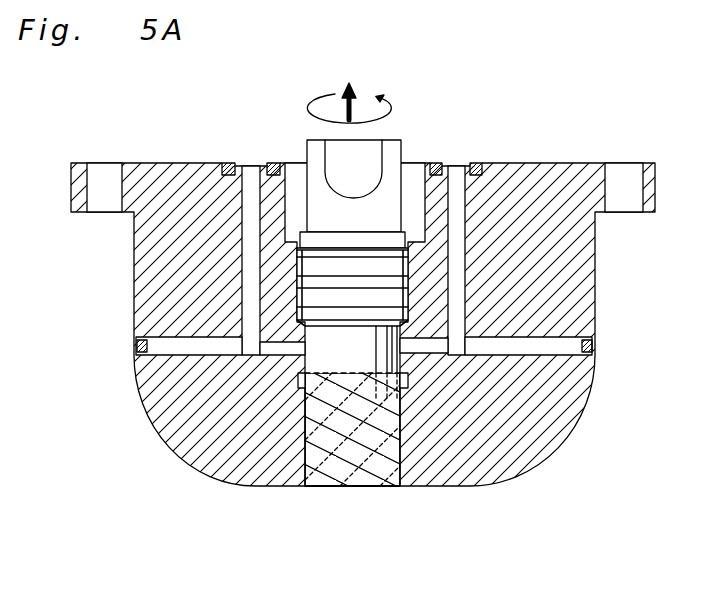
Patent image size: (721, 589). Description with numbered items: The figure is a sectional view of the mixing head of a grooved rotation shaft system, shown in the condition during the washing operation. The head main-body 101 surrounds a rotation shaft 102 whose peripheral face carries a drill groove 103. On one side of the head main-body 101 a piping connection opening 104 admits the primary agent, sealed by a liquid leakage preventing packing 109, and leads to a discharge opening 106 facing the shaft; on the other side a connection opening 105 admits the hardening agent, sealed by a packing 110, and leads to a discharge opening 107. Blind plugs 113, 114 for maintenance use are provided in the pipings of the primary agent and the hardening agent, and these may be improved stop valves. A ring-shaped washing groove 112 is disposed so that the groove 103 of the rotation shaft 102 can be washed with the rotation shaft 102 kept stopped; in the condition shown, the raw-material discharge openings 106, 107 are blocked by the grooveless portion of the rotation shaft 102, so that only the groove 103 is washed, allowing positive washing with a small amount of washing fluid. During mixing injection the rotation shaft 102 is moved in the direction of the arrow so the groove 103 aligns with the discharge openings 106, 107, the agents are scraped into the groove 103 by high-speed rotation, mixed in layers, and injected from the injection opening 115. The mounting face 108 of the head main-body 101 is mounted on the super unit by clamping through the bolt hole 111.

The head main-body 101 is at (177, 420).
The rotation shaft 102 is at (390, 168).
The drill groove 103 is at (372, 418).
The piping connection opening 104 is at (238, 163).
The connection opening 105 is at (473, 161).
The discharge opening 106 is at (288, 357).
The discharge opening 107 is at (403, 345).
The mounting face 108 is at (577, 163).
The liquid leakage preventing packing 109 is at (225, 163).
The packing 110 is at (482, 165).
The bolt hole 111 is at (100, 213).
The ring-shaped washing groove 112 is at (408, 380).
The blind plug 113 is at (132, 362).
The blind plug 114 is at (593, 358).
The injection opening 115 is at (322, 487).